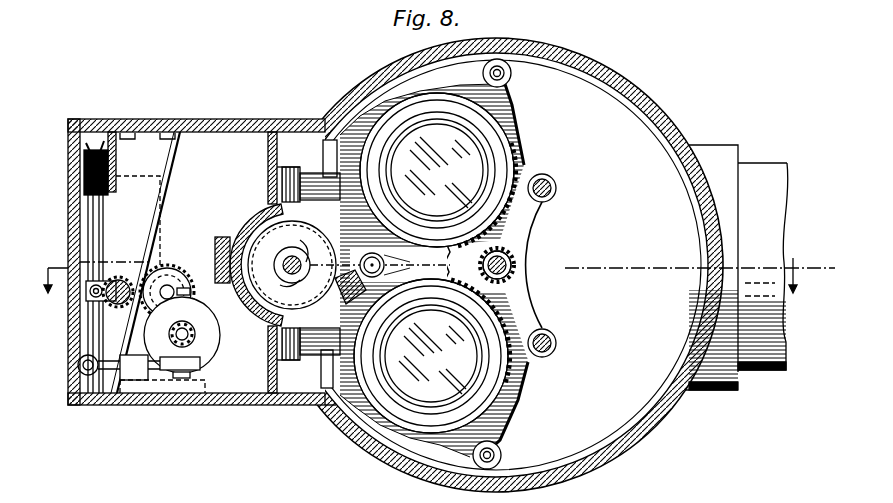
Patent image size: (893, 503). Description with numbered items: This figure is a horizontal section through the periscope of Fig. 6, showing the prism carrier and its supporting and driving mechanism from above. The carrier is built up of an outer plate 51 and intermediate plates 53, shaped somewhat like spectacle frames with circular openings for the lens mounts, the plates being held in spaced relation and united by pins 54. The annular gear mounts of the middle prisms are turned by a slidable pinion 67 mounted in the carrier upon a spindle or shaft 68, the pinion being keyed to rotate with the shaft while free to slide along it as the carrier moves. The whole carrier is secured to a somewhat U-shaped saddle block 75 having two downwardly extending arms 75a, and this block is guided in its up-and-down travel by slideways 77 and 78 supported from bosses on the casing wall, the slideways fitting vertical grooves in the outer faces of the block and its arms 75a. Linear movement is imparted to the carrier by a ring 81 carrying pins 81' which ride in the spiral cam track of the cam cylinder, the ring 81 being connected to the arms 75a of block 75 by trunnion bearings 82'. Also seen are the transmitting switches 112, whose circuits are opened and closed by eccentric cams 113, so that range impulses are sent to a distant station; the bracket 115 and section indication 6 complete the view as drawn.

The outer plate 51 is at (340, 127).
The intermediate plate 53 is at (530, 234).
The pin 54 is at (553, 189).
The slidable pinion 67 is at (515, 265).
The spindle or shaft 68 is at (507, 275).
The U-shaped block 75 is at (266, 138).
The downwardly extending arm 75a is at (305, 397).
The slideway 77 is at (322, 165).
The slideway 78 is at (313, 347).
The ring 81 is at (247, 281).
The pin 81' is at (333, 276).
The trunnion bearing 82' is at (285, 263).
The transmitting switch 112 is at (68, 244).
The eccentric cam 113 is at (100, 300).
The bracket 115 is at (150, 396).
The section line 6- 6 is at (412, 287).